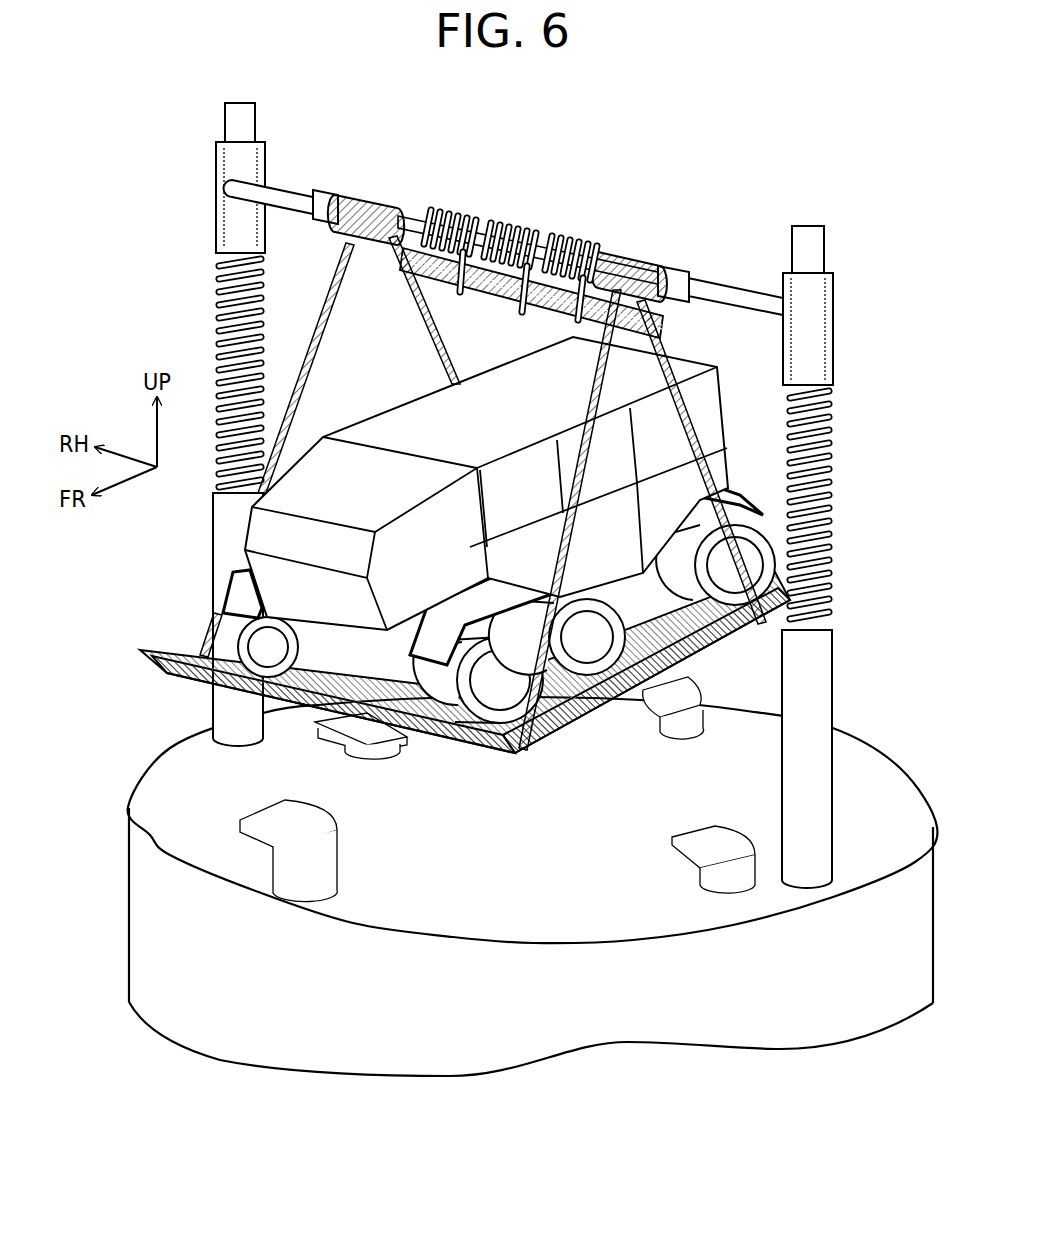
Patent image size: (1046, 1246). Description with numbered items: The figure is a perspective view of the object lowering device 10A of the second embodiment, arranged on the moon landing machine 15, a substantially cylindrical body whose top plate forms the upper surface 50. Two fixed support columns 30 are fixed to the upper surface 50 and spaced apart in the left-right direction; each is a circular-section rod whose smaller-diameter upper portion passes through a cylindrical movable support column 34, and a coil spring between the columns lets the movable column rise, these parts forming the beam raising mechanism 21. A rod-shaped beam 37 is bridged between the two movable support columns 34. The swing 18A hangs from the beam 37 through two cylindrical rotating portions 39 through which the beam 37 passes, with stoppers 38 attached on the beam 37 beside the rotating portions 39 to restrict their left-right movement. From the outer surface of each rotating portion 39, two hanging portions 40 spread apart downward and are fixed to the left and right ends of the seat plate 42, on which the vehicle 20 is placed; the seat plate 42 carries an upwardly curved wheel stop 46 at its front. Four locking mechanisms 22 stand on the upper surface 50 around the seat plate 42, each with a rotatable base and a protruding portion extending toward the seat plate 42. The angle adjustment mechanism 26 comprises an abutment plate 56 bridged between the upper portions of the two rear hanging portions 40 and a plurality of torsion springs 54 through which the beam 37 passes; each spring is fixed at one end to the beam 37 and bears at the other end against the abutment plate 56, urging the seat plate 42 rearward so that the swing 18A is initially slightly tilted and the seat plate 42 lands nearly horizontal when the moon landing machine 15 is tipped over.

The object lowering device 10A is at (780, 172).
The moon landing machine 15 is at (128, 932).
The swing 18A is at (344, 332).
The vehicle 20 is at (507, 385).
The beam raising mechanism 21 is at (208, 320).
The locking mechanism 22 is at (335, 748).
The angle adjustment mechanism 26 is at (456, 190).
The fixed support column 30 is at (212, 543).
The movable support column 34 is at (215, 190).
The beam 37 is at (300, 182).
The stopper 38 is at (335, 190).
The rotating portion 39 is at (382, 196).
The hanging portion 40 is at (298, 392).
The seat plate 42 is at (586, 730).
The wheel stop 46 is at (456, 740).
The upper surface 50 is at (887, 832).
The torsion spring 54 is at (455, 218).
The abutment plate 56 is at (484, 296).